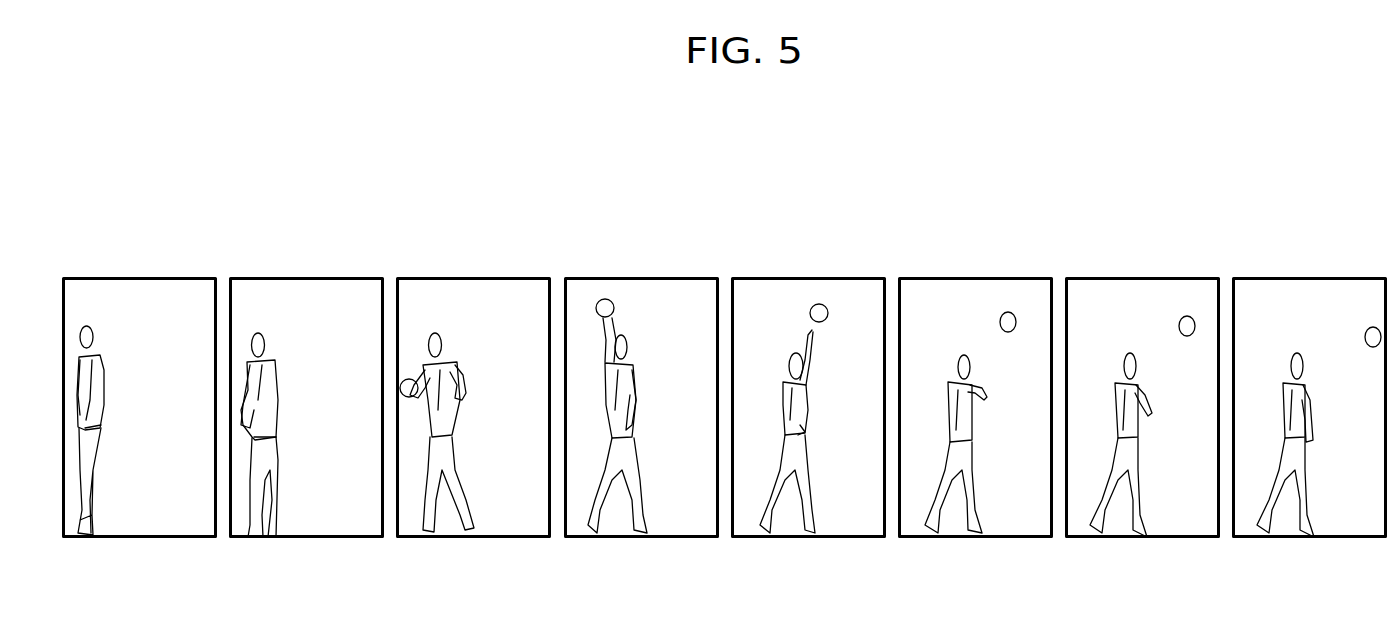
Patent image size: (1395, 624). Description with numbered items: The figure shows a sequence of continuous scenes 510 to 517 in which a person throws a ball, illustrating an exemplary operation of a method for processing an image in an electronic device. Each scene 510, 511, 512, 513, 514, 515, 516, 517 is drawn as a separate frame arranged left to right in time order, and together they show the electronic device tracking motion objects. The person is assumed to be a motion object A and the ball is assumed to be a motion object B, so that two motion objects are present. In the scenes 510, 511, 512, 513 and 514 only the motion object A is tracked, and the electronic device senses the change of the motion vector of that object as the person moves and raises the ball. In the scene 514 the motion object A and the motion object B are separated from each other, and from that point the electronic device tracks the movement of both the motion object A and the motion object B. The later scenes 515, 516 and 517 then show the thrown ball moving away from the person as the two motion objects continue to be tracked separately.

The scene 510 is at (139, 539).
The scene 511 is at (306, 539).
The scene 512 is at (473, 539).
The scene 513 is at (641, 539).
The scene 514 is at (798, 401).
The scene 515 is at (975, 539).
The scene 516 is at (1142, 539).
The scene 517 is at (1309, 539).
The motion object A is at (789, 375).
The motion object B is at (823, 306).